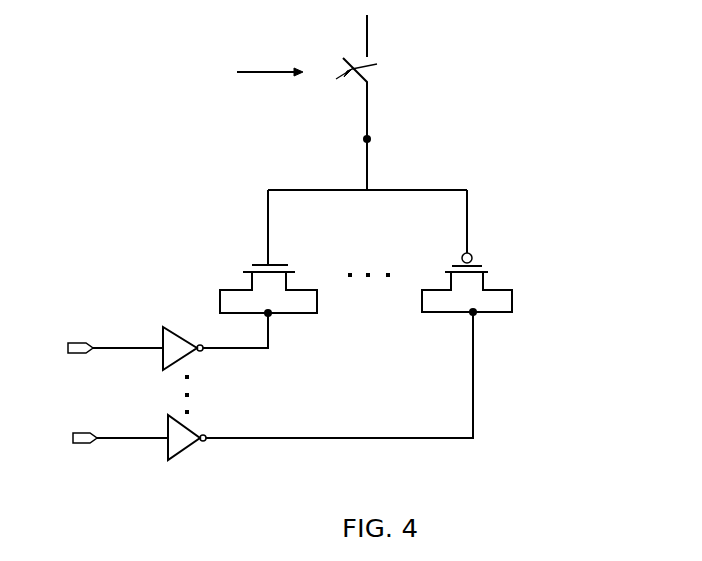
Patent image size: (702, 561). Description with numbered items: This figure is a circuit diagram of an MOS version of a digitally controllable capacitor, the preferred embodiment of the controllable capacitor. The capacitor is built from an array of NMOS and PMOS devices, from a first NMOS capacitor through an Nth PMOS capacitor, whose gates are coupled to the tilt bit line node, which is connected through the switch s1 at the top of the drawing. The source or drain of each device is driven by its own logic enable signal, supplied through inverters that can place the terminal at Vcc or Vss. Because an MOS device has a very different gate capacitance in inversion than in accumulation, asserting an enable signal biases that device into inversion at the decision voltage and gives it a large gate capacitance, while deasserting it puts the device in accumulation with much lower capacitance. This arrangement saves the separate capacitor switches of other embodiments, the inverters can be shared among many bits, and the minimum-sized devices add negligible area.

The switch s1 is at (377, 77).